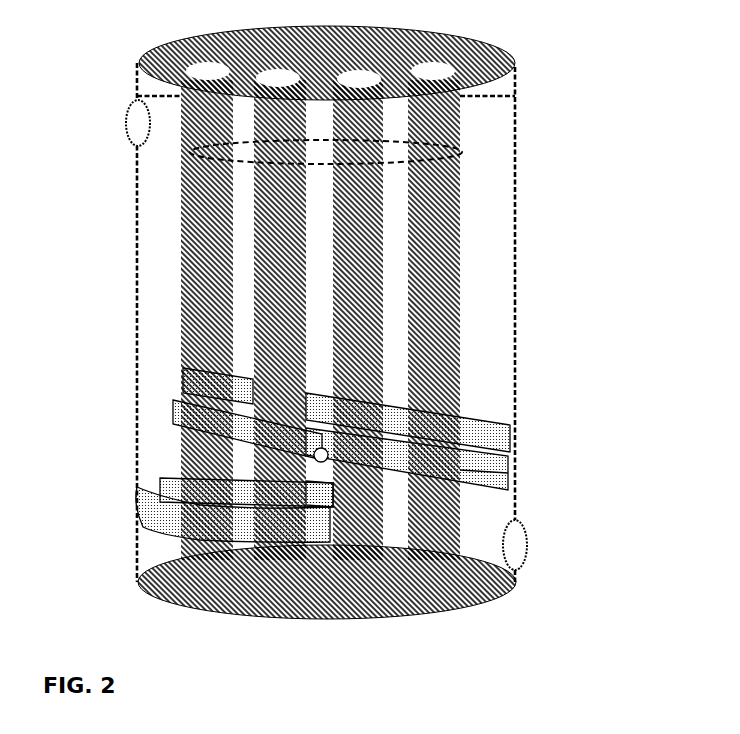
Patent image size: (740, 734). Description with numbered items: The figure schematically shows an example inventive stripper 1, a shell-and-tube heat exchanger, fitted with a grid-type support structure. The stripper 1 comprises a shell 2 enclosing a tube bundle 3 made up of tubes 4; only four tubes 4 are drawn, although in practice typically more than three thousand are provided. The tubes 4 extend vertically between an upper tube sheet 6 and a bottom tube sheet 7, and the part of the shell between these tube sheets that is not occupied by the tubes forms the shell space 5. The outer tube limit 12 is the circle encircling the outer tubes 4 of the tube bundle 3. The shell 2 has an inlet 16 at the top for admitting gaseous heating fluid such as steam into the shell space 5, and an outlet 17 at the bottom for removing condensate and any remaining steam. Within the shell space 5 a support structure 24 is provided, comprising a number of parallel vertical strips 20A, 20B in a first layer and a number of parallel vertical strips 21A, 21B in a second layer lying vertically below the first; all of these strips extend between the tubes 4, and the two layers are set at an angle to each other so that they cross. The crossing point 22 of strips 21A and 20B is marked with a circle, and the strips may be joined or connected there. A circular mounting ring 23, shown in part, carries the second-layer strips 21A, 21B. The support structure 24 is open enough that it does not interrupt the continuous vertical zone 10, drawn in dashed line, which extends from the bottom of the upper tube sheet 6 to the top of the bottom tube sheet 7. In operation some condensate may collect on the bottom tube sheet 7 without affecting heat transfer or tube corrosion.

The stripper 1 is at (584, 55).
The shell 2 is at (518, 132).
The tube bundle 3 is at (447, 542).
The tubes 4 is at (440, 236).
The shell space 5 is at (493, 170).
The upper tube sheet 6 is at (481, 60).
The bottom tube sheet 7 is at (493, 594).
The continuous vertical zone 10 is at (508, 328).
The outer tube limit 12 is at (447, 158).
The inlet 16 is at (133, 118).
The outlet 17 is at (525, 545).
The strip of the first layer 20A is at (502, 442).
The strip of the first layer 20B is at (497, 475).
The strip of the second layer 21A is at (193, 495).
The strip of the second layer 21B is at (352, 495).
The crossing point 22 is at (322, 447).
The circular mounting ring 23 is at (167, 518).
The support structure 24 is at (162, 396).